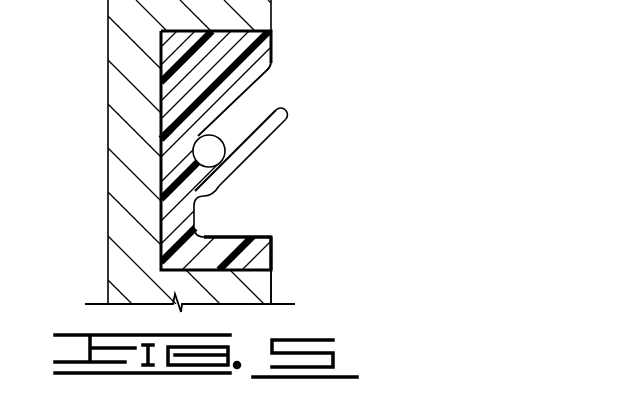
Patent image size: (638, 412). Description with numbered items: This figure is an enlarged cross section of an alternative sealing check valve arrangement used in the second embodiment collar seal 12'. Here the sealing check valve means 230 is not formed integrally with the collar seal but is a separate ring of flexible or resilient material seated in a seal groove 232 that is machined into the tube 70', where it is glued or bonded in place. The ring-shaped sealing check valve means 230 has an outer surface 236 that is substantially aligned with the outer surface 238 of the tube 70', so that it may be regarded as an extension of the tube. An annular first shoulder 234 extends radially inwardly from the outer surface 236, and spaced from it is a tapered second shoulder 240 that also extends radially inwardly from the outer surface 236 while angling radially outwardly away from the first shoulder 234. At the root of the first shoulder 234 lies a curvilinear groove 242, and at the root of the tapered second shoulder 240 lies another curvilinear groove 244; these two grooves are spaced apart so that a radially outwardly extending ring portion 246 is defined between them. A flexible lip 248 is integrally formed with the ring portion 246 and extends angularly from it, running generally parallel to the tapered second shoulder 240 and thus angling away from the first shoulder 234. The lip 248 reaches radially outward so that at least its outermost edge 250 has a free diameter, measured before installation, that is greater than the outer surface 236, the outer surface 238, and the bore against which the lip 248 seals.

The tube 70' is at (168, 156).
The second embodiment collar seal 12' is at (315, 150).
The tapered second shoulder 240 is at (272, 62).
The sealing check valve means 230 is at (206, 156).
The curvilinear groove 244 is at (199, 130).
The seal groove 232 is at (170, 138).
The ring portion 246 is at (208, 176).
The curvilinear groove 242 is at (192, 220).
The flexible lip 248 is at (284, 112).
The outermost edge 250 is at (290, 118).
The first shoulder 234 is at (269, 237).
The outer surface 236 is at (272, 258).
The outer surface 238 is at (272, 291).